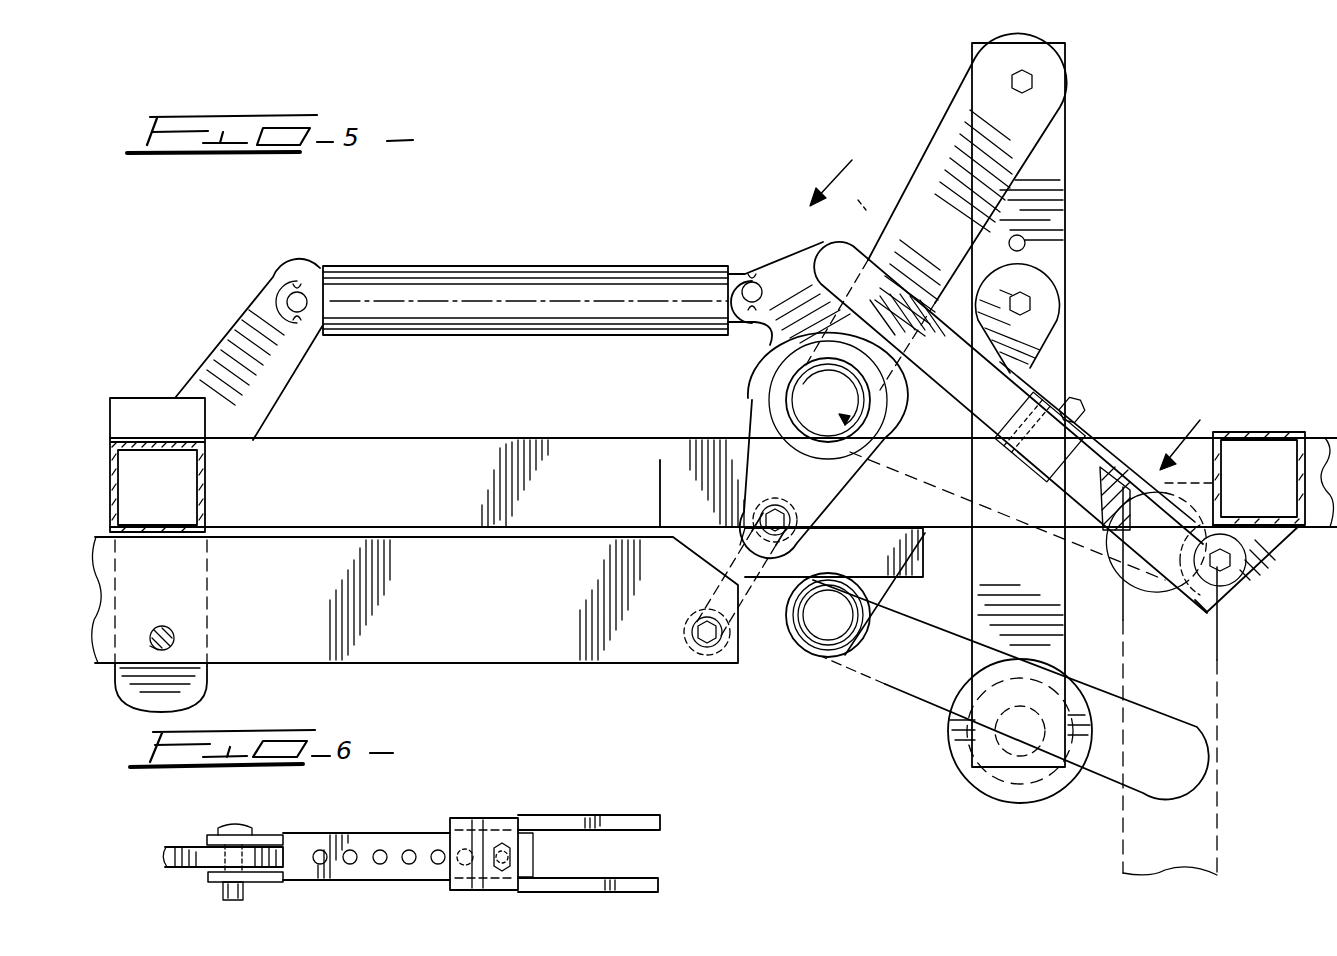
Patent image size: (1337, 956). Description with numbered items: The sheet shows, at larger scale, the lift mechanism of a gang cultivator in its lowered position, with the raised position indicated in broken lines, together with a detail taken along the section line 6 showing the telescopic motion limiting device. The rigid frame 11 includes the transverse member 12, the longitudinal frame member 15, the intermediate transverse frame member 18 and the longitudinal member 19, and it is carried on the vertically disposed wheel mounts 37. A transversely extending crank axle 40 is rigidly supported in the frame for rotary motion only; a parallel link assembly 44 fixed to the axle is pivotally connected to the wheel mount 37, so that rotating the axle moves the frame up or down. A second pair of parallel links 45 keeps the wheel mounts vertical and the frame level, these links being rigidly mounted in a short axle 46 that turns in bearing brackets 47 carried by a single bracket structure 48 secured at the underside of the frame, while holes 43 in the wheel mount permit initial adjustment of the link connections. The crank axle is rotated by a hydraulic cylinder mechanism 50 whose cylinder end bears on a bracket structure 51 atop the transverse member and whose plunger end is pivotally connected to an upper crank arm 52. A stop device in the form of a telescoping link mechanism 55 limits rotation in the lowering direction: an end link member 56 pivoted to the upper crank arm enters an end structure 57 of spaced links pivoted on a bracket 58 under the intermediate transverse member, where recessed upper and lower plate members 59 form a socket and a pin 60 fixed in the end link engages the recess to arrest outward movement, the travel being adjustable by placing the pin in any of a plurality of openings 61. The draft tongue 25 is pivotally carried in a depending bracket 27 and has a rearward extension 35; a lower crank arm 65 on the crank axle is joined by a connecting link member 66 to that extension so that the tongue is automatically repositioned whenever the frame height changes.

In FIG. 5, the section line 6— 6 is at (1005, 311).
In FIG. 5, the rigid frame 11 is at (1330, 450).
In FIG. 5, the transverse member 12 is at (130, 478).
In FIG. 6, the longitudinal frame member 15 is at (408, 832).
In FIG. 5, the intermediate transverse frame member 18 is at (1243, 447).
In FIG. 5, the longitudinal member 19 is at (487, 455).
In FIG. 5, the draft tongue 25 is at (112, 598).
In FIG. 5, the depending bracket 27 is at (205, 572).
In FIG. 5, the rearward extension 35 is at (500, 628).
In FIG. 5, the wheel mount 37 is at (1060, 170).
In FIG. 5, the crank axle 40 is at (778, 396).
In FIG. 5, the holes 43 is at (1022, 244).
In FIG. 5, the parallel link assembly 44 is at (945, 148).
In FIG. 5, the parallel links 45 is at (925, 532).
In FIG. 5, the short axle 46 is at (840, 630).
In FIG. 5, the bearing brackets 47 is at (843, 655).
In FIG. 5, the strap 48 is at (745, 548).
In FIG. 5, the hydraulic cylinder mechanism 50 is at (555, 287).
In FIG. 5, the bracket structure 51 is at (292, 352).
In FIG. 5, the upper crank arm 52 is at (770, 348).
In FIG. 6, the upper crank arm 52 is at (180, 852).
In FIG. 5, the telescoping link mechanism 55 is at (1040, 386).
In FIG. 6, the telescoping link mechanism 55 is at (582, 818).
In FIG. 5, the end link member 56 is at (928, 300).
In FIG. 6, the end link member 56 is at (335, 845).
In FIG. 5, the end structure 57 is at (1132, 590).
In FIG. 6, the end structure 57 is at (608, 880).
In FIG. 5, the bracket 58 is at (1280, 575).
In FIG. 5, the upper and lower plate members 59 is at (1098, 432).
In FIG. 6, the upper and lower plate members 59 is at (458, 835).
In FIG. 5, the pin 60 is at (1078, 412).
In FIG. 6, the pin 60 is at (503, 848).
In FIG. 6, the openings 61 is at (348, 864).
In FIG. 5, the lower crank arm 65 is at (850, 520).
In FIG. 5, the connecting link member 66 is at (745, 585).